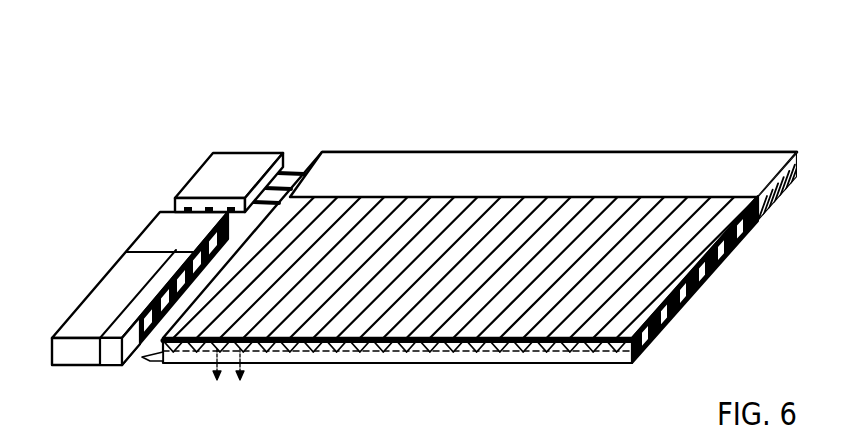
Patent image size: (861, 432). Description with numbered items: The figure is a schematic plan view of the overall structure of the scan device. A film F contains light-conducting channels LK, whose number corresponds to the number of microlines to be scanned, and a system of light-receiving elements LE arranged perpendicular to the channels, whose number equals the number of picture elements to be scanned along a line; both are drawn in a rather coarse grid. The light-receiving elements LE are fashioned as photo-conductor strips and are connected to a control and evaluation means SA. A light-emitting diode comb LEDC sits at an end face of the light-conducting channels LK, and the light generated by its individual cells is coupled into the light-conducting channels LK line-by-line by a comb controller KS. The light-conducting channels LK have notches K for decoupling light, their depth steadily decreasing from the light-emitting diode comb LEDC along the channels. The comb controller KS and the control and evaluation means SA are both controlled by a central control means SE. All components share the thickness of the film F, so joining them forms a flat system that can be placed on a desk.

The light-receiving elements LE is at (455, 207).
The control and evaluation means SA is at (582, 163).
The central control means SE is at (235, 165).
The comb controller KS is at (118, 279).
The light-emitting diode comb LEDC is at (111, 353).
The film F is at (684, 306).
The light-conducting channels LK is at (338, 360).
The notches K is at (486, 346).